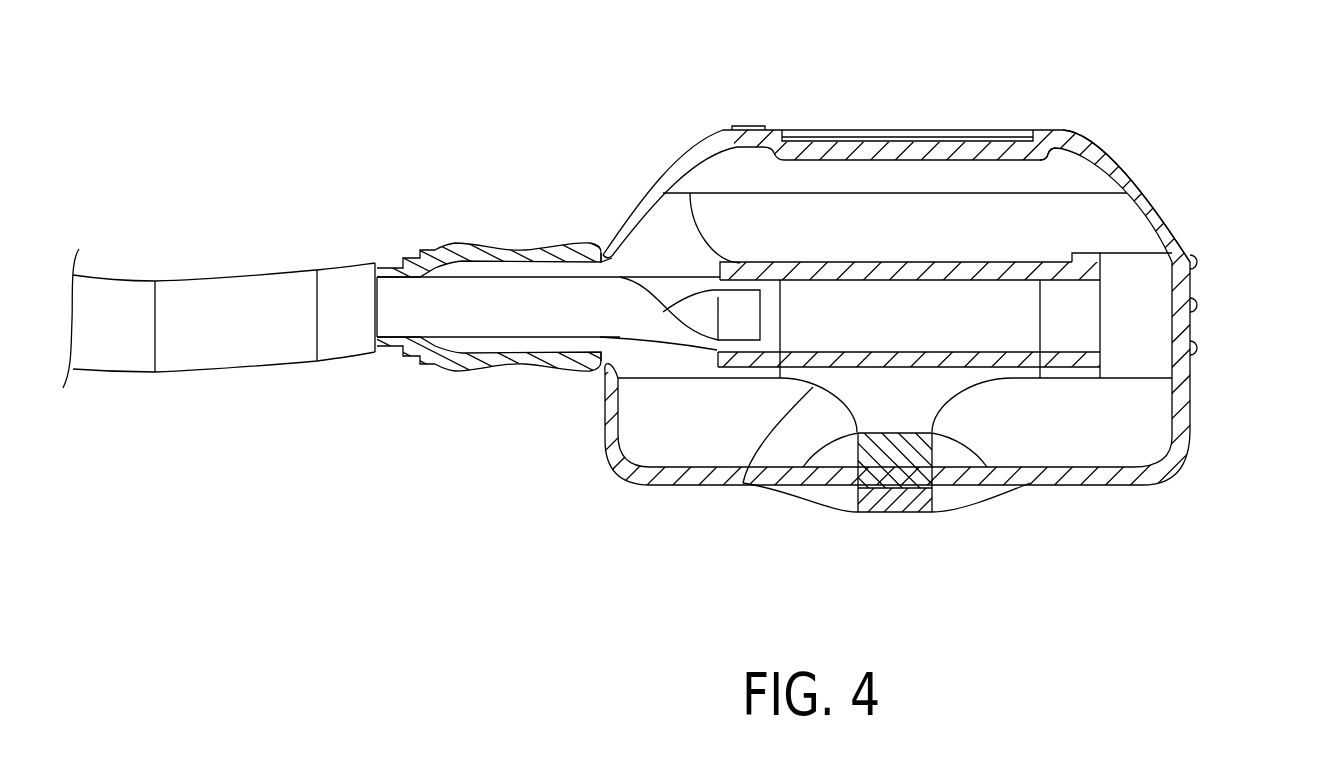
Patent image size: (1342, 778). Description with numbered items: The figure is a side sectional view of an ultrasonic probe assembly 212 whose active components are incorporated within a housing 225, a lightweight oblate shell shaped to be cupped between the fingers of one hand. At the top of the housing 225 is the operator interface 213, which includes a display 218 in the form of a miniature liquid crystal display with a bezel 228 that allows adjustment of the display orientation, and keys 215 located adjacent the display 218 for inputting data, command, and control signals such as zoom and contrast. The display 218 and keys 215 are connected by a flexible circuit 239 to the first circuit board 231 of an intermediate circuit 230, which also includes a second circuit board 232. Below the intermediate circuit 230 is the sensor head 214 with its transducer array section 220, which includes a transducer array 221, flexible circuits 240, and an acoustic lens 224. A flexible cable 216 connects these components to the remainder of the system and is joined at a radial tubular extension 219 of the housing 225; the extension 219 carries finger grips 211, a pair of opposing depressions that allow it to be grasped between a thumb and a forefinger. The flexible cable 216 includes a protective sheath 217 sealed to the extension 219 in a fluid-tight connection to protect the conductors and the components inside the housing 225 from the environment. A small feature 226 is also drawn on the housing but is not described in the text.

The finger grips 211 is at (515, 244).
The ultrasonic probe assembly 212 is at (1246, 584).
The operator interface 213 is at (760, 185).
The sensor head 214 is at (1182, 453).
The keys 215 is at (745, 118).
The flexible cable 216 is at (598, 352).
The protective sheath 217 is at (114, 278).
The display 218 is at (972, 122).
The radial tubular extension 219 is at (578, 243).
The transducer array section 220 is at (695, 428).
The transducer array 221 is at (944, 448).
The acoustic lens 224 is at (902, 520).
The housing 225 is at (1102, 157).
The ridges 226 is at (1203, 262).
The bezel 228 is at (1053, 130).
The intermediate circuit 230 is at (945, 325).
The first circuit board 231 is at (1052, 256).
The second circuit board 232 is at (1087, 336).
The flexible circuit 239 is at (678, 221).
The flexible circuits 240 is at (1010, 383).